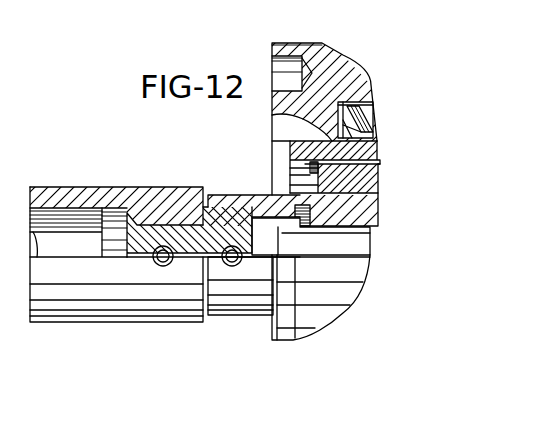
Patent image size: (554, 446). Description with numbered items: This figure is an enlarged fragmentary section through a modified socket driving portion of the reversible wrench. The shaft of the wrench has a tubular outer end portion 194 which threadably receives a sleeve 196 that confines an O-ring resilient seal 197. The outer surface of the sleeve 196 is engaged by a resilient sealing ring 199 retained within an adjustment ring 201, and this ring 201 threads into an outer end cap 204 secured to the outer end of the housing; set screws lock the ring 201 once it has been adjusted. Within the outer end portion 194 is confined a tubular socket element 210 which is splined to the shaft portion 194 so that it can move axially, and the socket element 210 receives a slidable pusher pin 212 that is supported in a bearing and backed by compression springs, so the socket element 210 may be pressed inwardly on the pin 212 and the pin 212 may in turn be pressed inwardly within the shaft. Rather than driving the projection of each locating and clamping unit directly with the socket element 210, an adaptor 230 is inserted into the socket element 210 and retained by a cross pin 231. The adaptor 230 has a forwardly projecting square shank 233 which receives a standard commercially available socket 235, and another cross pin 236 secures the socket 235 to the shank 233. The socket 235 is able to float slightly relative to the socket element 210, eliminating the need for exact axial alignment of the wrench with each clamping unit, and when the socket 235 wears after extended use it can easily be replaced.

The adjustment ring 201 is at (334, 63).
The resilient sealing ring 199 is at (372, 116).
The O-ring resilient seal 197 is at (276, 118).
The sleeve 196 is at (372, 152).
The tubular outer end portion 194 is at (374, 171).
The tubular socket element 210 is at (360, 208).
The pusher pin 212 is at (357, 240).
The outer end cap 204 is at (358, 270).
The adaptor 230 is at (237, 200).
The square shank 233 is at (172, 222).
The socket 235 is at (98, 317).
The cross pin 236 is at (165, 268).
The cross pin 231 is at (237, 268).